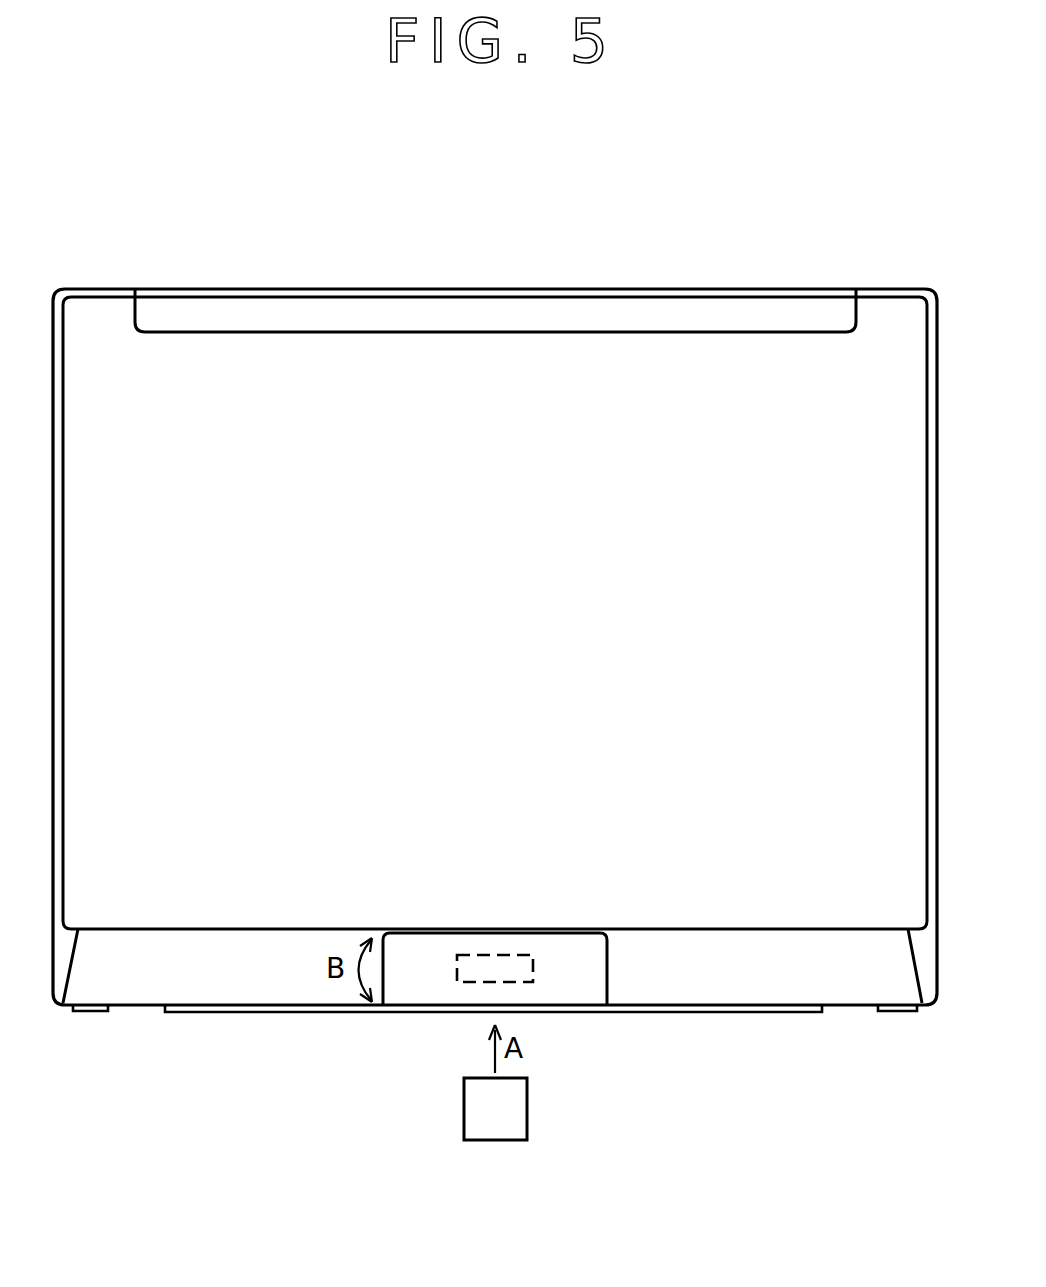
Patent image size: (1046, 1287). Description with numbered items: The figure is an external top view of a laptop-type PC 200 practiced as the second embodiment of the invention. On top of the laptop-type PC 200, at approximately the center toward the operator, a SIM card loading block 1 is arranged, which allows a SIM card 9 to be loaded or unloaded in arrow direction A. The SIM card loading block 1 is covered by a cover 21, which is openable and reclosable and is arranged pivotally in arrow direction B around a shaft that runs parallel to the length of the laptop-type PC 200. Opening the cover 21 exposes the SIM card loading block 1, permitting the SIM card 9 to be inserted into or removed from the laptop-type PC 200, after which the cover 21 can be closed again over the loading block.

The laptop-type PC 200 is at (551, 274).
The cover 21 is at (407, 988).
The SIM card loading block 1 is at (503, 980).
The SIM card 9 is at (499, 1130).